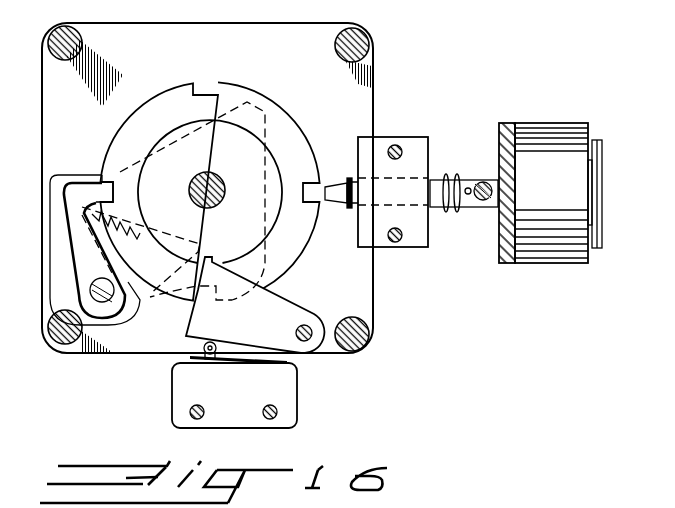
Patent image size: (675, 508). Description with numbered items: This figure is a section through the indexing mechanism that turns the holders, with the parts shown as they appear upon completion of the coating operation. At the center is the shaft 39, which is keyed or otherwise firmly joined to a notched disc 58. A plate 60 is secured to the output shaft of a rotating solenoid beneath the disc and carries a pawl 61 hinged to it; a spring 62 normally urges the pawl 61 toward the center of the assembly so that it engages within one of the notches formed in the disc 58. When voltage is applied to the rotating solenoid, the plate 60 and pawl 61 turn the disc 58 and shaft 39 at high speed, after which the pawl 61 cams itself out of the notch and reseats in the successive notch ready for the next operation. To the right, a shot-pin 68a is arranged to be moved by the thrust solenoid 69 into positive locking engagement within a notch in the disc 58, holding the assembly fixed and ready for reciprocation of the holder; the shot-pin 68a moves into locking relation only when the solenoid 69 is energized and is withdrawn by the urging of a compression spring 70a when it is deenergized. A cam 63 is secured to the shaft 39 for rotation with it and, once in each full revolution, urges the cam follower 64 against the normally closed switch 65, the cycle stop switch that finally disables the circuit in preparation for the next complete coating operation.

The shaft 39 is at (226, 183).
The notched disc 58 is at (230, 83).
The plate 60 is at (263, 112).
The pawl 61 is at (73, 282).
The spring 62 is at (127, 239).
The cam 63 is at (280, 203).
The cam follower 64 is at (286, 302).
The normally closed switch 65 is at (176, 386).
The shot-pin 68a is at (339, 181).
The solenoid 69 is at (560, 123).
The compression spring 70a is at (442, 180).